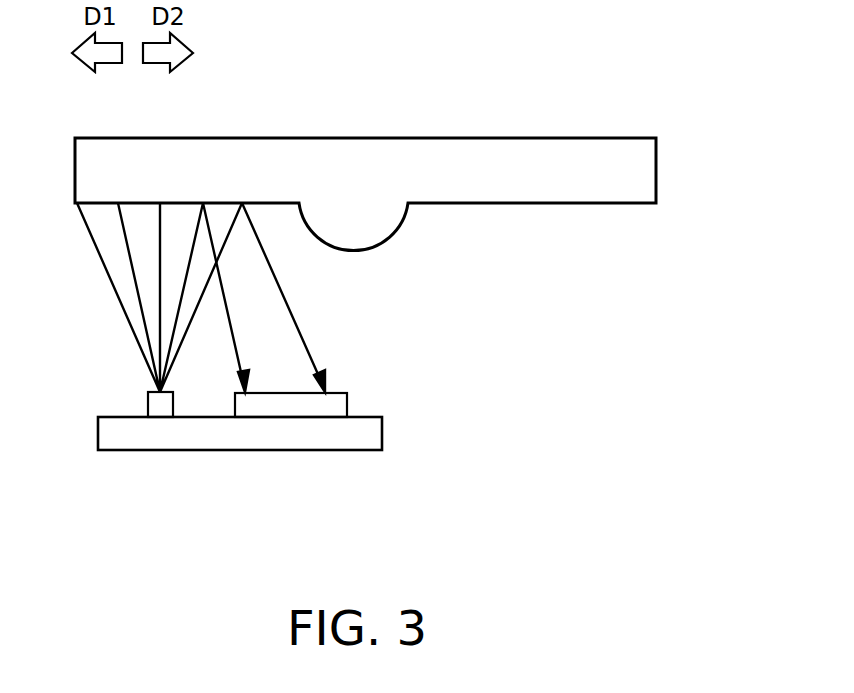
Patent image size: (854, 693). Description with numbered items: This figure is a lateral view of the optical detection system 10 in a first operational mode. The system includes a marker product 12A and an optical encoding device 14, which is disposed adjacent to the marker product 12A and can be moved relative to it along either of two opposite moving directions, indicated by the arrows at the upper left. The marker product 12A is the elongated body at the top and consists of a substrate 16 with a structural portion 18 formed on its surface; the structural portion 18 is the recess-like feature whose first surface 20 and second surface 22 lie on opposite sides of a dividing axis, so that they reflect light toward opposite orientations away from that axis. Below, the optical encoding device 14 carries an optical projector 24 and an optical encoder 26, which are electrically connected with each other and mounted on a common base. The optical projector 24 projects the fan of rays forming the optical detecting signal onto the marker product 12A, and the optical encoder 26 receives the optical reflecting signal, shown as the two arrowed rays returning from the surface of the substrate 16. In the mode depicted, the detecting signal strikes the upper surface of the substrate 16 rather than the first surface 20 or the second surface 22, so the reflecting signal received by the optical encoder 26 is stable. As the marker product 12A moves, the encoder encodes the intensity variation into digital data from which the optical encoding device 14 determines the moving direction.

The optical detection system 10 is at (632, 368).
The marker product 12A is at (492, 78).
The optical encoding device 14 is at (295, 503).
The substrate 16 is at (463, 167).
The structural portion 18 is at (361, 210).
The first surface 20 is at (308, 226).
The second surface 22 is at (405, 218).
The optical projector 24 is at (162, 409).
The optical encoder 26 is at (273, 407).